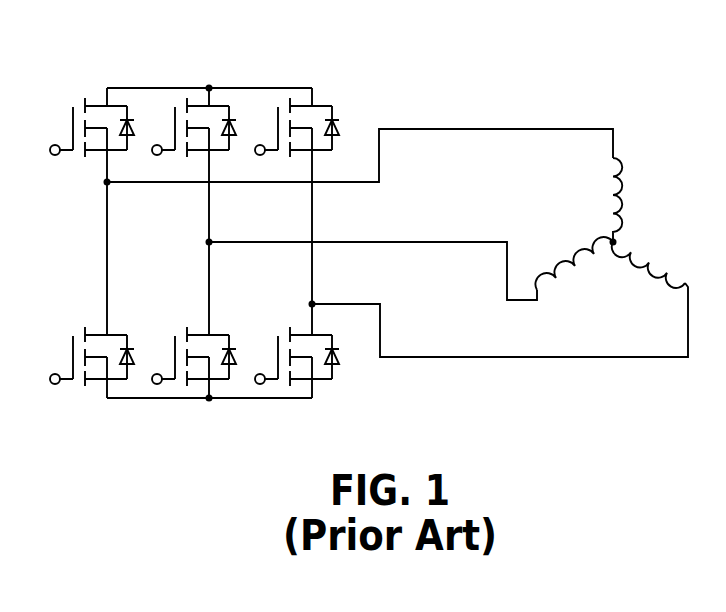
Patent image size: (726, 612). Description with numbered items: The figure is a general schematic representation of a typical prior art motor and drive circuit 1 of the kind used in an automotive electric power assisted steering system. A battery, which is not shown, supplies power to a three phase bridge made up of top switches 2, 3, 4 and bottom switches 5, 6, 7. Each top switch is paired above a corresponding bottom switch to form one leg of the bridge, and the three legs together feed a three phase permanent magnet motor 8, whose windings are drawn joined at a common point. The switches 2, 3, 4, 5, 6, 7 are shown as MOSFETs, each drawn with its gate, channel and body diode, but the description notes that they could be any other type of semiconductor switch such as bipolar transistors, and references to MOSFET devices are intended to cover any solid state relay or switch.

The motor and drive circuit 1 is at (432, 91).
The top switch 2 is at (92, 110).
The top switch 3 is at (194, 110).
The top switch 4 is at (297, 110).
The bottom switch 5 is at (92, 346).
The bottom switch 6 is at (194, 347).
The bottom switch 7 is at (297, 367).
The three phase permanent magnet motor 8 is at (645, 369).